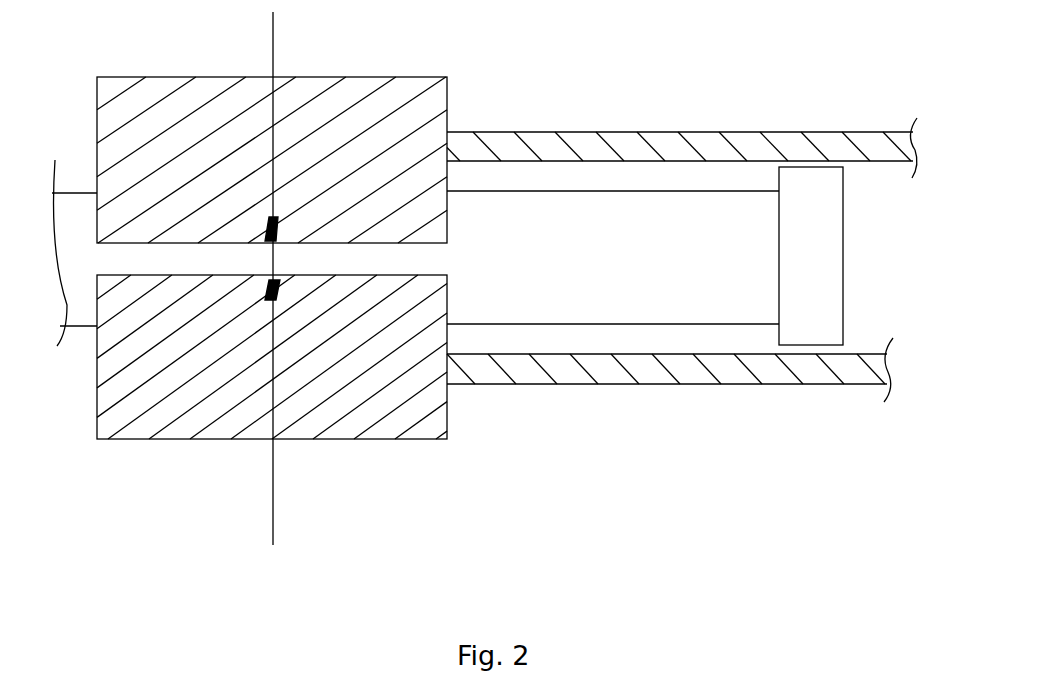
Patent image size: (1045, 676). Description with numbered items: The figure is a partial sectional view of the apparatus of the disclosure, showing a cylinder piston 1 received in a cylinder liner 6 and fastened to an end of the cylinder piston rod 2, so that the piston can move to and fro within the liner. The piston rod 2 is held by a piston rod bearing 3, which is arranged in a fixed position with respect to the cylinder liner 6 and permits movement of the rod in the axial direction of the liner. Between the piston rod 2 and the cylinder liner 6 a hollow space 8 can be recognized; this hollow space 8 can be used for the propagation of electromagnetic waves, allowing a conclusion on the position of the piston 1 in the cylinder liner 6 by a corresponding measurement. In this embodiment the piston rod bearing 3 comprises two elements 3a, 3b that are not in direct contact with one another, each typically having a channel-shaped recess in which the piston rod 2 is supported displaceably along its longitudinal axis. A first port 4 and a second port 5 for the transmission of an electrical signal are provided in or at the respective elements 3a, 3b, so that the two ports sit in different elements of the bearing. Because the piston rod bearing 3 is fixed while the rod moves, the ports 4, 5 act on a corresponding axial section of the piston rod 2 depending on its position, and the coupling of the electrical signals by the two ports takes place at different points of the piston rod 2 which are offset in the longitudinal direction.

The cylinder piston 1 is at (843, 255).
The cylinder piston rod 2 is at (670, 190).
The piston rod bearing 3 is at (83, 158).
The first element of the piston rod bearing 3a is at (446, 77).
The second element of the piston rod bearing 3b is at (447, 440).
The first port 4 is at (280, 282).
The second port 5 is at (266, 236).
The cylinder liner 6 is at (715, 385).
The hollow space 8 is at (555, 342).